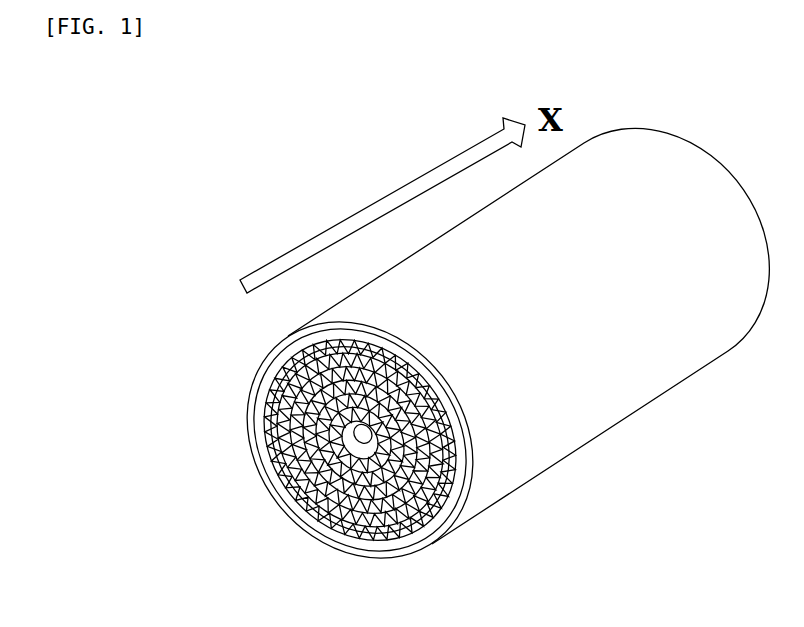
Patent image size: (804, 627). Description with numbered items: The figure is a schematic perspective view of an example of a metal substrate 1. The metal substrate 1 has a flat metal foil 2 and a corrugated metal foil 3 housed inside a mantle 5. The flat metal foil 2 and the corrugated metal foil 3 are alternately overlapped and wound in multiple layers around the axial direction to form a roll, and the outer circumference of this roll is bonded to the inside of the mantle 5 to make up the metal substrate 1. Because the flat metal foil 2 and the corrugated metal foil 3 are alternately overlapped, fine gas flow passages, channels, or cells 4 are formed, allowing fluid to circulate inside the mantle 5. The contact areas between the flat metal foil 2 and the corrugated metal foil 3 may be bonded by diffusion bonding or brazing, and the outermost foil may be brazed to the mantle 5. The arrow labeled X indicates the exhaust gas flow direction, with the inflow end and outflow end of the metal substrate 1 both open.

The metal substrate 1 is at (237, 367).
The flat metal foil 2 is at (355, 550).
The corrugated metal foil 3 is at (372, 553).
The cells 4 is at (403, 547).
The mantle 5 is at (252, 452).